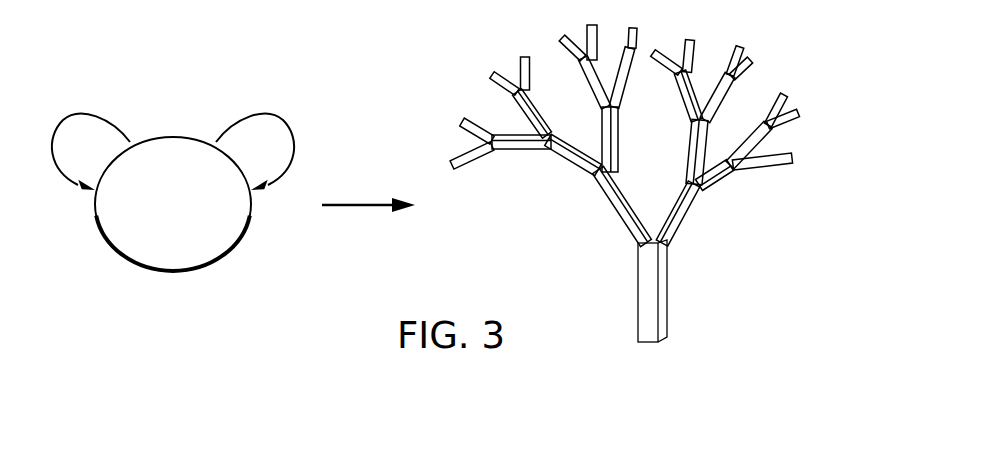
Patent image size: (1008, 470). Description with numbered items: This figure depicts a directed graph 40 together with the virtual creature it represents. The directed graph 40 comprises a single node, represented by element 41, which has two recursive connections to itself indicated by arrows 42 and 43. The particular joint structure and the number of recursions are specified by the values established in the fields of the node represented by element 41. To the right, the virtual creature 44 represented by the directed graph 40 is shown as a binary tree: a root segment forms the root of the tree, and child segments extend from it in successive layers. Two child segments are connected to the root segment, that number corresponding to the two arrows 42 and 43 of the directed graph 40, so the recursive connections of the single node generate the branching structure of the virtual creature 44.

The directed graph 40 is at (76, 245).
The node element 41 is at (135, 268).
The recursive connection arrow 42 is at (85, 106).
The recursive connection arrow 43 is at (263, 106).
The virtual creature 44 is at (499, 233).